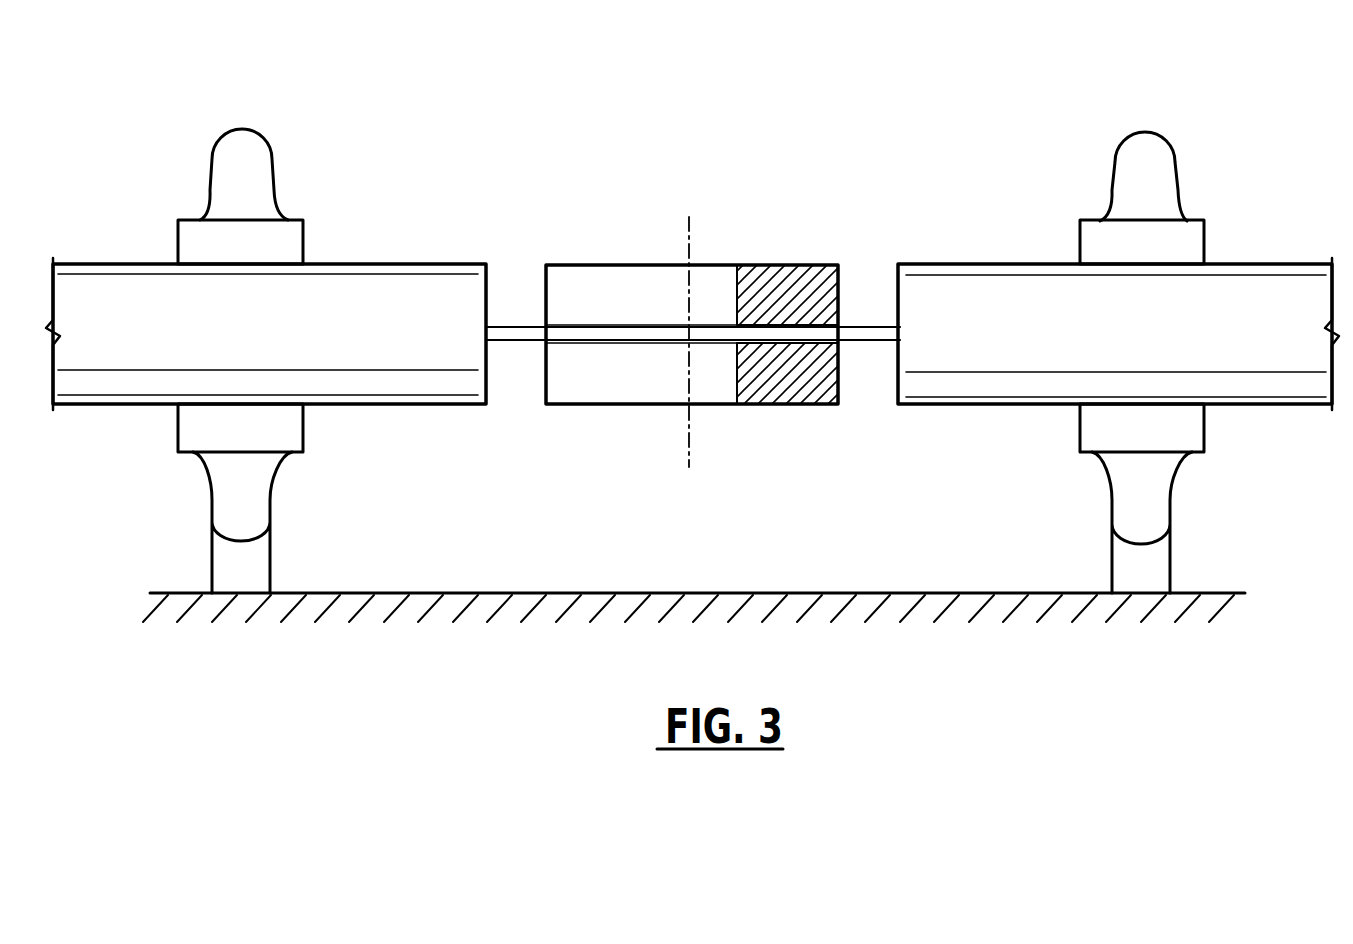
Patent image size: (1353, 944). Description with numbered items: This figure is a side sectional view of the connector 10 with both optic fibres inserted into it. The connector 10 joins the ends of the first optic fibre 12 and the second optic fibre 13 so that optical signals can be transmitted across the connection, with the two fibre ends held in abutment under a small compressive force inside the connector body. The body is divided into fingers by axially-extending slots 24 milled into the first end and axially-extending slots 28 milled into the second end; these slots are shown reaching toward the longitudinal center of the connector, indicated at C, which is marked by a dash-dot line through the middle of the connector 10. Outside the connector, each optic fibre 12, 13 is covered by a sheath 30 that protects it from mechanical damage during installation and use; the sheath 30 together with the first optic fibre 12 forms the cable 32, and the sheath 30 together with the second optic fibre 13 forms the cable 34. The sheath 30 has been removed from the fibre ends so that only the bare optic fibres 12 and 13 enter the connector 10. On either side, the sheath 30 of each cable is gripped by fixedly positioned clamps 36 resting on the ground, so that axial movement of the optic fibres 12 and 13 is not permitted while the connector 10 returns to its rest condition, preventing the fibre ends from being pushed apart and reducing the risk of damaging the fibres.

The connector 10 is at (700, 318).
The first optic fibre 12 is at (513, 343).
The second optic fibre 13 is at (870, 343).
The axially-extending slots 24 is at (640, 277).
The axially-extending slots 28 is at (652, 392).
The sheath 30 is at (418, 392).
The cable 32 is at (458, 226).
The cable 34 is at (899, 232).
The clamps 36 is at (266, 133).
The longitudinal center C is at (688, 380).